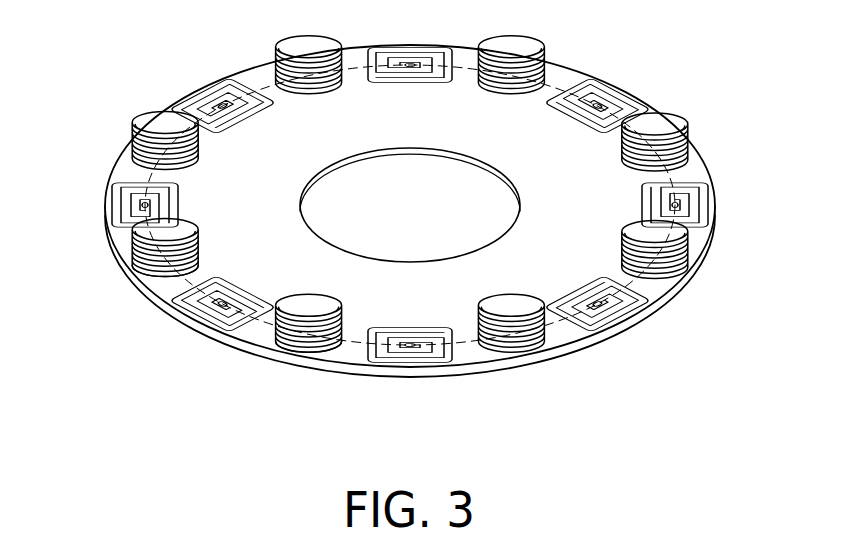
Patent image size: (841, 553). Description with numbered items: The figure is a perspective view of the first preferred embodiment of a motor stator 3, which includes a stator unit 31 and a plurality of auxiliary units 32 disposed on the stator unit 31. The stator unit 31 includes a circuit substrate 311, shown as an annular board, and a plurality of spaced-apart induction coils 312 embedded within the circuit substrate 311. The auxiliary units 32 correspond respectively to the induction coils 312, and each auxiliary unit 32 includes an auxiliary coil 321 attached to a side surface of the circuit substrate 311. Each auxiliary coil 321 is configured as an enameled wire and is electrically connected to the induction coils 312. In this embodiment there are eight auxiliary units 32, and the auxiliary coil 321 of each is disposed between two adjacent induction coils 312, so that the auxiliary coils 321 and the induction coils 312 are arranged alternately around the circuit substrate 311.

The motor stator 3 is at (401, 233).
The stator unit 31 is at (636, 340).
The circuit substrate 311 is at (552, 352).
The induction coil 312 is at (404, 330).
The auxiliary unit 32 is at (120, 250).
The auxiliary coil 321 is at (162, 280).